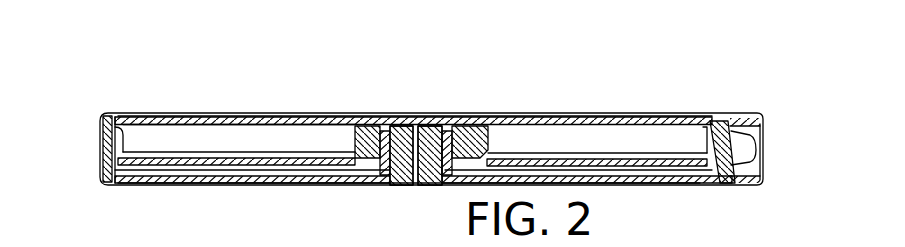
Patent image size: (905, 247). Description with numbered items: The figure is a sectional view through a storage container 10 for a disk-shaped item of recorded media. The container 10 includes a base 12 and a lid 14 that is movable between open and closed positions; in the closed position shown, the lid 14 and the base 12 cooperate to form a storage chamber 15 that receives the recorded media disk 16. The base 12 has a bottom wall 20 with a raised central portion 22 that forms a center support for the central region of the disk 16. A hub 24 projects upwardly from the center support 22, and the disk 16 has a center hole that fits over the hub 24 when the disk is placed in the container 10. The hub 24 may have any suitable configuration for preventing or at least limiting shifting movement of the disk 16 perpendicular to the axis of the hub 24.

The storage container 10 is at (723, 97).
The base 12 is at (682, 192).
The lid 14 is at (208, 108).
The storage chamber 15 is at (258, 140).
The recorded media disk 16 is at (588, 163).
The bottom wall 20 is at (175, 185).
The raised central portion 22 is at (353, 184).
The hub 24 is at (462, 150).